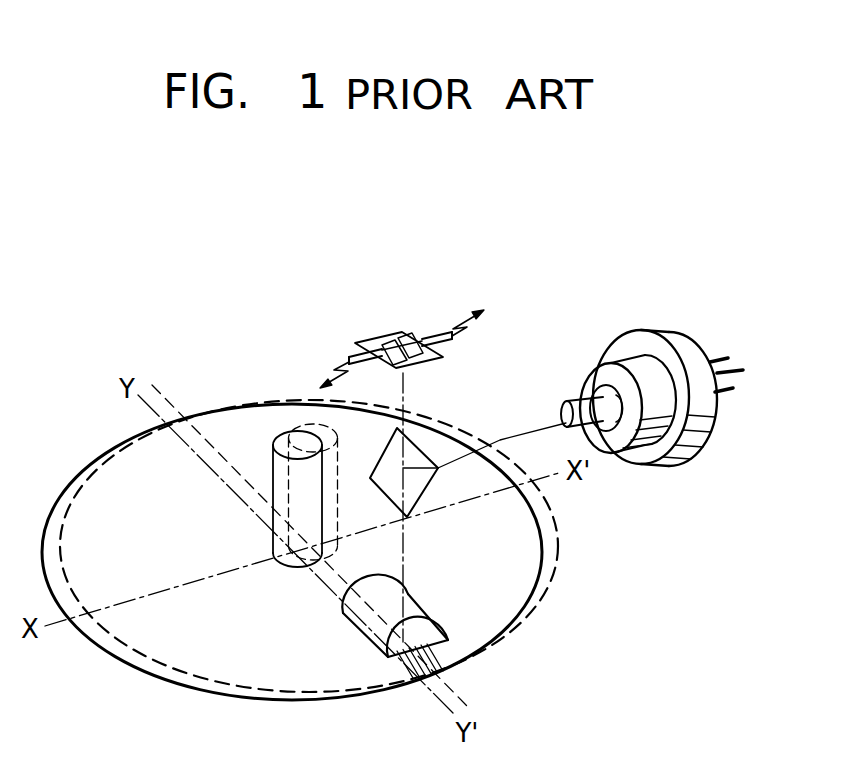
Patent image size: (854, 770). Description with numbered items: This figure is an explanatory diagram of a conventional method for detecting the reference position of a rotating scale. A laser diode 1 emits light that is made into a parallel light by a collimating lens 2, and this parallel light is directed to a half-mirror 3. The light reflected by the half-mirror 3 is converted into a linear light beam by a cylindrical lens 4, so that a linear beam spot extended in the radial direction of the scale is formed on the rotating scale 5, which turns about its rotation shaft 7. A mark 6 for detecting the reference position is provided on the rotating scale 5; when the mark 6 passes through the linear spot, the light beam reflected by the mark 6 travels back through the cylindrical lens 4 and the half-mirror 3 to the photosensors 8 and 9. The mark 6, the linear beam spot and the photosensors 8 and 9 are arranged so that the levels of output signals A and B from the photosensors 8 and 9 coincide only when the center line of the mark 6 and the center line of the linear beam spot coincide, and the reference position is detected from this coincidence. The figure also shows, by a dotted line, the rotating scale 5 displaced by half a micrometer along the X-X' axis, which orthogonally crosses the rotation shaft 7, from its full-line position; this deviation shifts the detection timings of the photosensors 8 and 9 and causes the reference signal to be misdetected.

The laser diode 1 is at (690, 468).
The collimating lens 2 is at (568, 408).
The half-mirror 3 is at (430, 487).
The cylindrical lens 4 is at (420, 594).
The rotating scale 5 is at (223, 700).
The mark 6 is at (401, 674).
The rotation shaft 7 is at (270, 545).
The photosensor 8 is at (381, 344).
The photosensor 9 is at (401, 336).